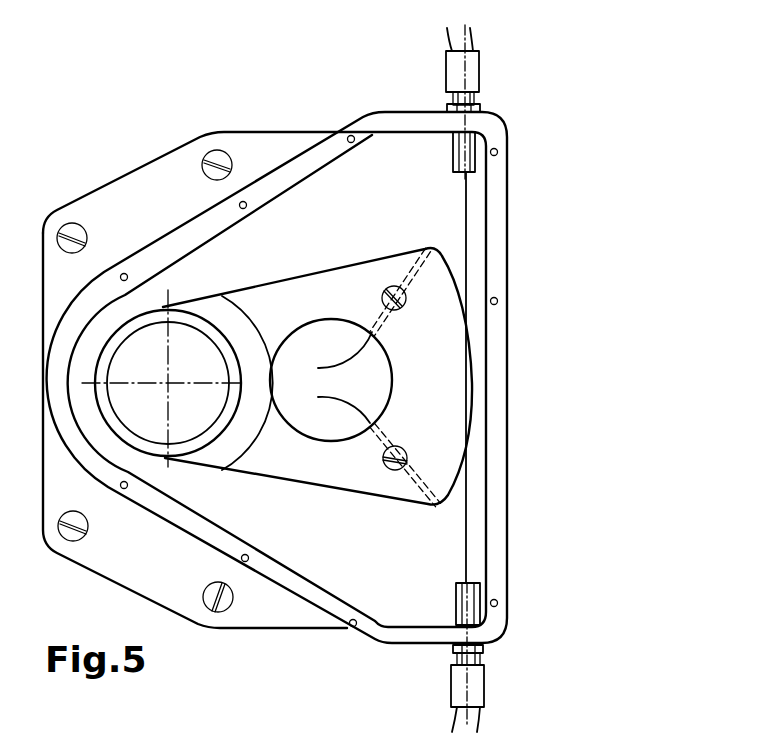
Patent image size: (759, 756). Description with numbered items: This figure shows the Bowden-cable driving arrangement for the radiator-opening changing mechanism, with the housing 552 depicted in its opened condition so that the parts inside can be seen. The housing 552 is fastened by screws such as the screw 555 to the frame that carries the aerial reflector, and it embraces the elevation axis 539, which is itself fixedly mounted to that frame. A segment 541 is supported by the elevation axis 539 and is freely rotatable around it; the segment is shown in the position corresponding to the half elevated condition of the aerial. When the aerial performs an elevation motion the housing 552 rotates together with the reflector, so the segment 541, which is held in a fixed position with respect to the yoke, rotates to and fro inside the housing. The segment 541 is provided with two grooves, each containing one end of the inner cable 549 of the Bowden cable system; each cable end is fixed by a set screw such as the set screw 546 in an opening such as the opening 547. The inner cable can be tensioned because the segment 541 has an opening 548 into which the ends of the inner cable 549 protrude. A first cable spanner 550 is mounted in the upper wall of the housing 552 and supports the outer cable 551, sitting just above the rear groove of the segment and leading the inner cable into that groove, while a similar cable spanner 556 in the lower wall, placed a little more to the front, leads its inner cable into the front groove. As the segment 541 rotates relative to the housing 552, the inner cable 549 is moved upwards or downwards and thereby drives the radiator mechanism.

The elevation axis 539 is at (162, 378).
The segment 541 is at (317, 376).
The set screw 546 is at (398, 309).
The opening 547 is at (440, 252).
The opening 548 is at (331, 380).
The inner cable 549 is at (465, 232).
The first cable spanner 550 is at (454, 134).
The outer cable 551 is at (476, 26).
The housing 552 is at (275, 377).
The screw 555 is at (100, 538).
The cable spanner 556 is at (452, 648).